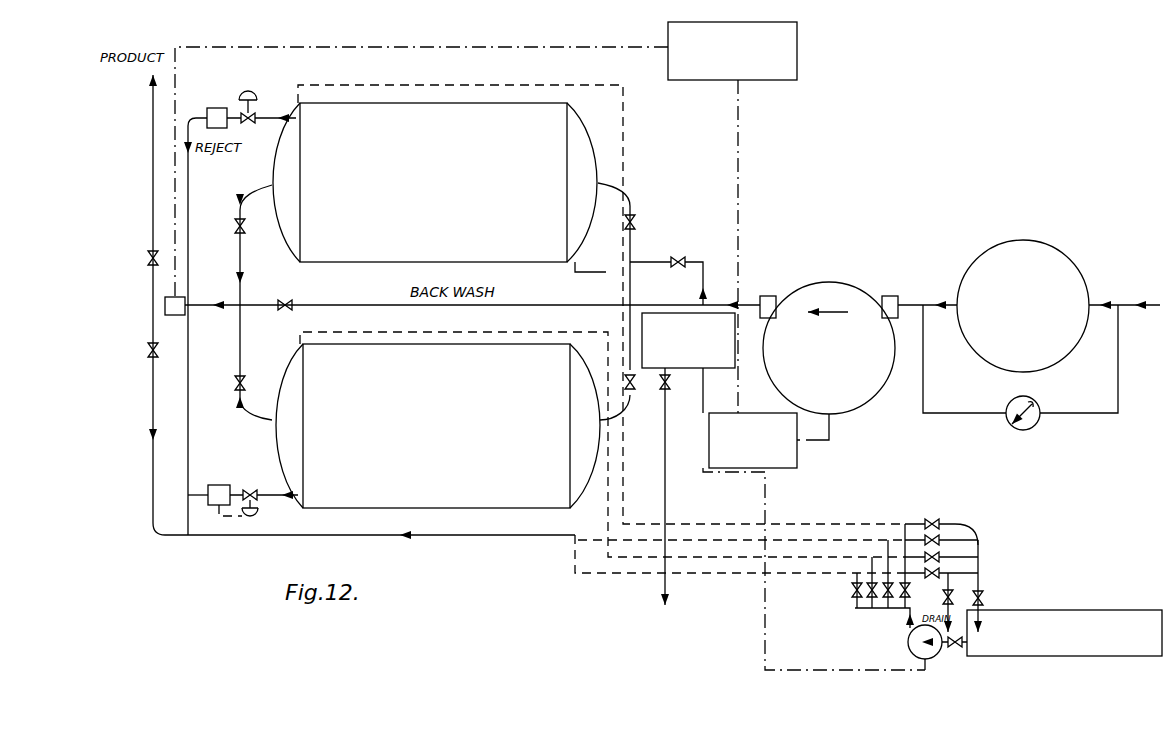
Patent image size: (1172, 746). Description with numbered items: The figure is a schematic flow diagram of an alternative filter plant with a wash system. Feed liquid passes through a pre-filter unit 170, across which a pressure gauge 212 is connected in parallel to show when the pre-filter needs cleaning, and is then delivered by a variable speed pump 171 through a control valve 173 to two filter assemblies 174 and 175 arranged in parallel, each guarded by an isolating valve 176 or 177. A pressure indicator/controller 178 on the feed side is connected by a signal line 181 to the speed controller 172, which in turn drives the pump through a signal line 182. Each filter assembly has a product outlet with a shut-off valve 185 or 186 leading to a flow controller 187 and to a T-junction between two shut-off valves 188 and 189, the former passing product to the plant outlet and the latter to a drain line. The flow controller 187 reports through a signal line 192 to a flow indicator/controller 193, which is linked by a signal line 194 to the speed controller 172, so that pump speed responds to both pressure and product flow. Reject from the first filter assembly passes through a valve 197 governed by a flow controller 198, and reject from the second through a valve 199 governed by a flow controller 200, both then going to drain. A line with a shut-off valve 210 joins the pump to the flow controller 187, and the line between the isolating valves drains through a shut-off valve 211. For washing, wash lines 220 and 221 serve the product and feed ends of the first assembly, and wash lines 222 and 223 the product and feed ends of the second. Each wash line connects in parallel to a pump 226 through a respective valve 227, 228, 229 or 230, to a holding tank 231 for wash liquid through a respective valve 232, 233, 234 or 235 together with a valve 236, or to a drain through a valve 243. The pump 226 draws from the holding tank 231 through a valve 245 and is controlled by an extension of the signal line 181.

The pre-filter unit 170 is at (1058, 260).
The variable speed pump 171 is at (848, 288).
The speed controller 172 is at (797, 456).
The control valve 173 is at (680, 262).
The filter assembly 174 is at (560, 110).
The filter assembly 175 is at (508, 498).
The isolating valve 176 is at (636, 222).
The isolating valve 177 is at (634, 396).
The pressure indicator/controller 178 is at (705, 306).
The signal line 181 is at (705, 398).
The signal line 182 is at (833, 437).
The shut-off valve 185 is at (236, 232).
The shut-off valve 186 is at (237, 389).
The flow controller 187 is at (168, 312).
The shut-off valve 188 is at (150, 256).
The shut-off valve 189 is at (152, 360).
The signal line 192 is at (216, 47).
The flow indicator/controller 193 is at (786, 22).
The signal line 194 is at (740, 158).
The valve 197 is at (250, 93).
The flow controller 198 is at (212, 108).
The valve 199 is at (258, 512).
The flow controller 200 is at (229, 470).
The shut-off valve 210 is at (290, 309).
The shut-off valve 211 is at (667, 392).
The pressure gauge 212 is at (1040, 421).
The wash line 220 is at (398, 85).
The wash line 221 is at (575, 273).
The wash line 222 is at (405, 332).
The wash line 223 is at (608, 574).
The pump 226 is at (913, 657).
The valve 227 is at (900, 614).
The valve 228 is at (883, 597).
The valve 229 is at (867, 594).
The valve 230 is at (852, 590).
The holding tank 231 is at (1095, 612).
The valve 232 is at (926, 520).
The valve 233 is at (918, 537).
The valve 234 is at (968, 543).
The valve 235 is at (960, 560).
The valve 236 is at (983, 638).
The valve 243 is at (900, 576).
The valve 245 is at (954, 650).